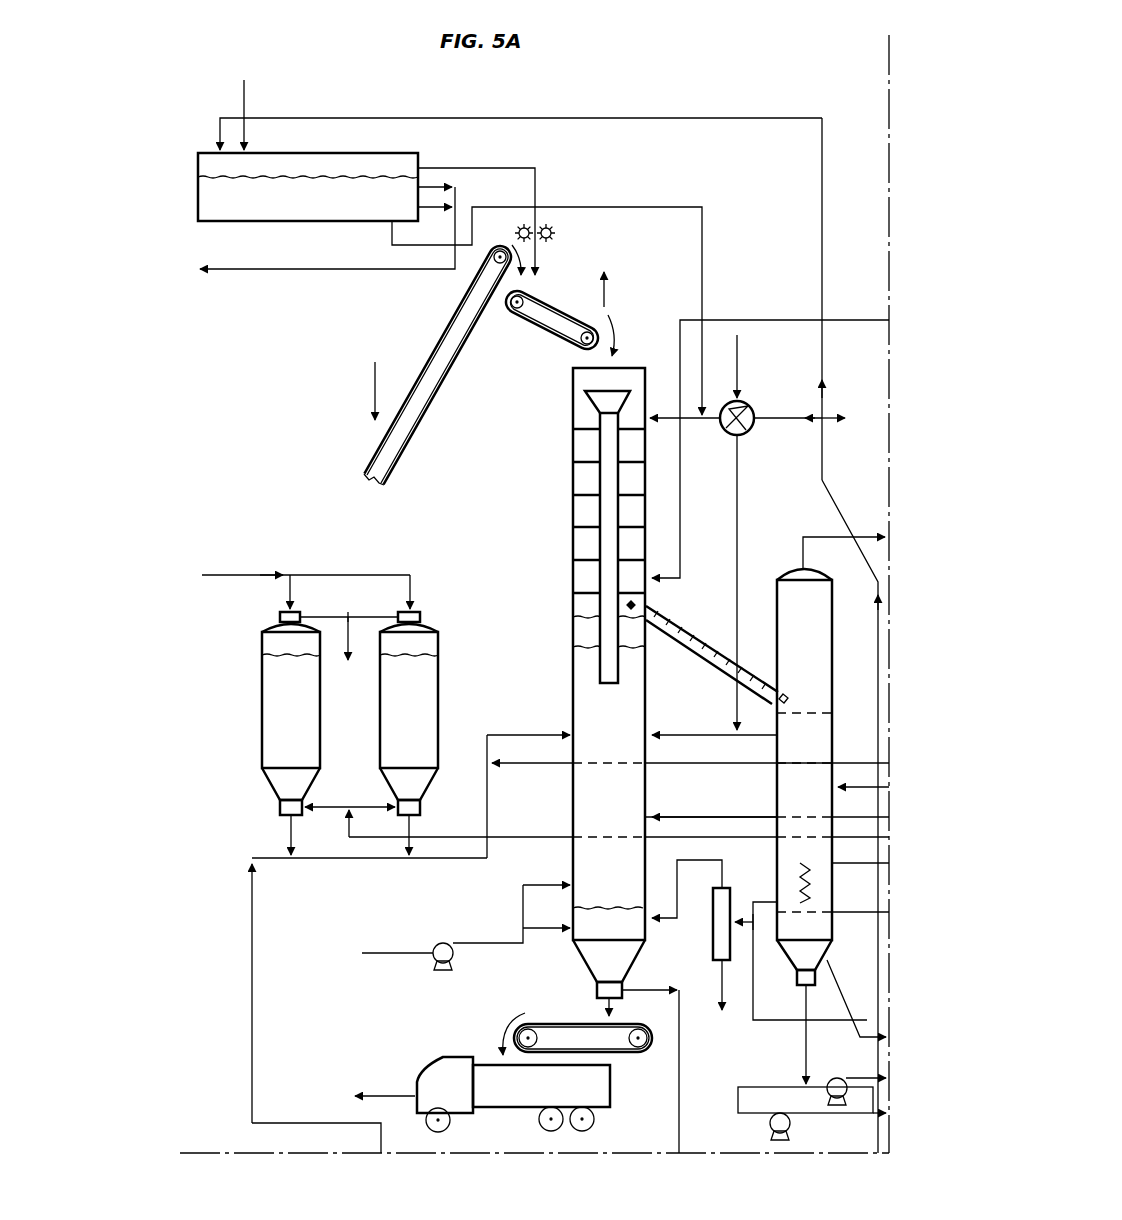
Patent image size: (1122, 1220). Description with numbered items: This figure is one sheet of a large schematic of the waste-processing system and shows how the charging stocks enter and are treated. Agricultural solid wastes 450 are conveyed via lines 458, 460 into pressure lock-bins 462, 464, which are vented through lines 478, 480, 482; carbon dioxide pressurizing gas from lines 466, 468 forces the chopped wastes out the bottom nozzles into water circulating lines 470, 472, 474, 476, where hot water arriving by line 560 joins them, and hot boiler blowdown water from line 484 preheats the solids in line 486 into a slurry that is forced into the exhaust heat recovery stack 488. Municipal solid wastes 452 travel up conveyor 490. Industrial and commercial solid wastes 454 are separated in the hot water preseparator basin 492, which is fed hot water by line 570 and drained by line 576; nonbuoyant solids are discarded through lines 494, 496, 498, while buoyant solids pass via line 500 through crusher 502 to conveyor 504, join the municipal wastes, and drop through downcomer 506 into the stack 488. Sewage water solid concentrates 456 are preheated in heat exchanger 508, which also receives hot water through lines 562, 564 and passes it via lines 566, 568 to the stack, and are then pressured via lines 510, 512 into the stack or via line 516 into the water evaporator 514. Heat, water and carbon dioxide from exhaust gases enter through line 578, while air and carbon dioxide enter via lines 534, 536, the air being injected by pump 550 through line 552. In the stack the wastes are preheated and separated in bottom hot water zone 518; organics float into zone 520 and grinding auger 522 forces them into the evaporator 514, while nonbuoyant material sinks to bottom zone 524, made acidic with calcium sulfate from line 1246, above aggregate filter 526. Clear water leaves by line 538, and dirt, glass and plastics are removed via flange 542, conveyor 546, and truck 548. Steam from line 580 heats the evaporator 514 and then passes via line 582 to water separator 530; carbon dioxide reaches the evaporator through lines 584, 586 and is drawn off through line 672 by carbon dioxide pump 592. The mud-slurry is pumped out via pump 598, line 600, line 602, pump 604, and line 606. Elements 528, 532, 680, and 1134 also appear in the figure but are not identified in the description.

The agricultural solid wastes 450 is at (225, 575).
The municipal solid wastes 452 is at (354, 391).
The industrial and commercial solid wastes 454 is at (222, 126).
The sewage water solid concentrates 456 is at (737, 352).
The line 458 is at (290, 596).
The line 460 is at (338, 568).
The pressure lock-bin 462 is at (262, 714).
The pressure lock-bin 464 is at (460, 696).
The line 466 is at (342, 807).
The line 468 is at (352, 814).
The water circulating line 470 is at (312, 840).
The water circulating line 472 is at (345, 862).
The water circulating line 474 is at (409, 825).
The water circulating line 476 is at (487, 785).
The vent line 478 is at (300, 612).
The vent line 480 is at (370, 612).
The vent line 482 is at (348, 655).
The line 484 is at (530, 764).
The line 486 is at (540, 735).
The exhaust heat recovery stack 488 is at (655, 798).
The conveyor 490 is at (456, 312).
The hot water preseparator basin 492 is at (198, 200).
The line 494 is at (442, 187).
The line 496 is at (442, 207).
The line 498 is at (278, 269).
The line 500 is at (440, 168).
The crusher 502 is at (556, 233).
The conveyor 504 is at (532, 322).
The downcomer 506 is at (573, 440).
The heat exchanger 508 is at (748, 430).
The line 510 is at (740, 486).
The line 512 is at (690, 735).
The water evaporator 514 is at (776, 582).
The line 516 is at (748, 738).
The bottom hot water zone 518 is at (573, 660).
The zone 520 is at (573, 604).
The grinding auger 522 is at (712, 624).
The bottom zone 524 is at (630, 908).
The aggregate filter 526 is at (636, 930).
The column 528 is at (722, 880).
The water separator 530 is at (745, 895).
The outlet line 532 is at (722, 980).
The line 534 is at (546, 915).
The line 536 is at (523, 885).
The line 538 is at (634, 990).
The flange 542 is at (597, 988).
The conveyor 546 is at (562, 1005).
The truck 548 is at (612, 1084).
The pump 550 is at (453, 955).
The line 552 is at (468, 943).
The line 560 is at (252, 858).
The line 562 is at (824, 470).
The line 564 is at (760, 416).
The line 566 is at (720, 422).
The line 568 is at (665, 426).
The line 570 is at (198, 170).
The line 576 is at (392, 238).
The line 578 is at (838, 320).
The line 580 is at (821, 929).
The line 582 is at (748, 928).
The line 584 is at (860, 899).
The line 586 is at (863, 775).
The carbon dioxide pump 592 is at (822, 990).
The pump 598 is at (830, 1082).
The line 600 is at (864, 1037).
The line 602 is at (776, 1087).
The pump 604 is at (790, 1124).
The line 606 is at (805, 1116).
The line 672 is at (858, 537).
The line 680 is at (867, 1020).
The line 1134 is at (856, 993).
The line 1246 is at (700, 822).